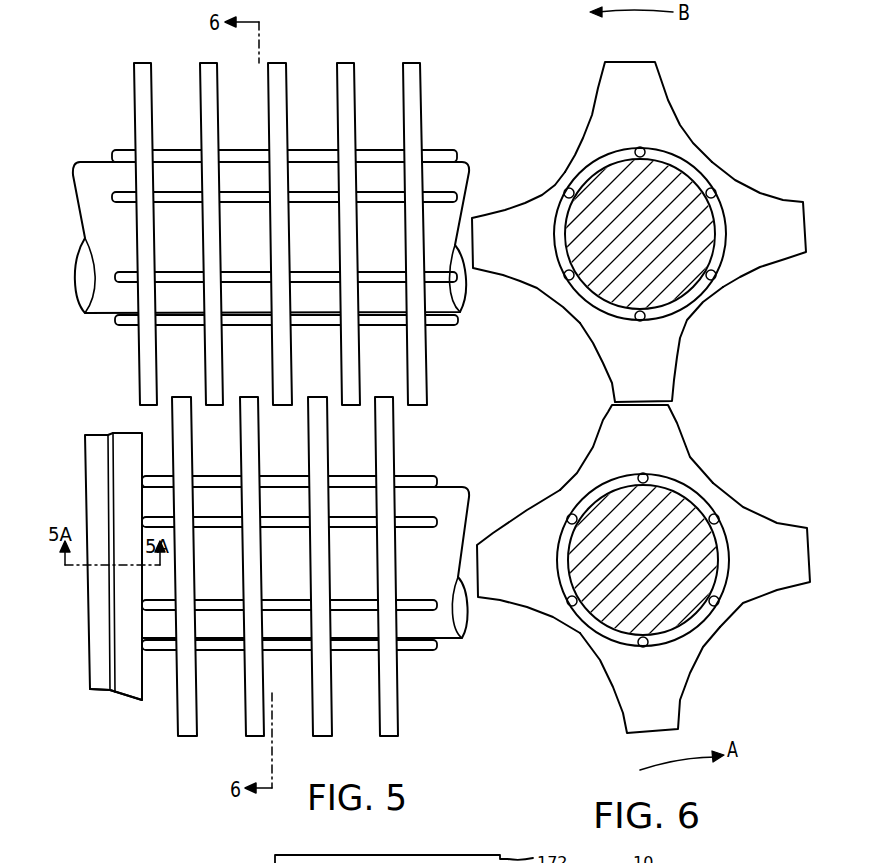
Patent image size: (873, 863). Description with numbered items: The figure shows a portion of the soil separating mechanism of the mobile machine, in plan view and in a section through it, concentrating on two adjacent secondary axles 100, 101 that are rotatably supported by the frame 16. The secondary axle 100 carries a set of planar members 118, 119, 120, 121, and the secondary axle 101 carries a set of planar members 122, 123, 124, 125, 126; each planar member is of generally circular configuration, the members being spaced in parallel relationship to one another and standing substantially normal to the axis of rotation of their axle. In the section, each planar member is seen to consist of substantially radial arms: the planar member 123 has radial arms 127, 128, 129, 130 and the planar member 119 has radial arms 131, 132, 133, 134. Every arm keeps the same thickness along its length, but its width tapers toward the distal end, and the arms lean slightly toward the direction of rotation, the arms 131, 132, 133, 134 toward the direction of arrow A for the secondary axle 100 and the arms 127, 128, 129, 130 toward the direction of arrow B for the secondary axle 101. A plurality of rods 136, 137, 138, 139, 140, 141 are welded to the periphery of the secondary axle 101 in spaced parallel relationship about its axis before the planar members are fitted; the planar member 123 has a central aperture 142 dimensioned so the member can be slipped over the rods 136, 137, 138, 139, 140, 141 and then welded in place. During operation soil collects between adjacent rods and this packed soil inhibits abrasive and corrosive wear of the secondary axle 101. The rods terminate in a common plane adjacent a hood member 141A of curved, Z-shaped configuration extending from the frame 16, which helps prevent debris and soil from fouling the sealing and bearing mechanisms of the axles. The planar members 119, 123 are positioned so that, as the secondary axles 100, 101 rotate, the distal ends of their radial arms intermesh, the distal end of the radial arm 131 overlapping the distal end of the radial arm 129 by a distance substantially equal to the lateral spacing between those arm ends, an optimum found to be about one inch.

In FIG. 5, the frame 16 is at (95, 658).
In FIG. 5, the secondary axle 100 is at (443, 623).
In FIG. 6, the secondary axle 100 is at (690, 605).
In FIG. 5, the secondary axle 101 is at (103, 173).
In FIG. 6, the secondary axle 101 is at (705, 220).
In FIG. 5, the planar member 118 is at (175, 713).
In FIG. 5, the planar member 119 is at (243, 712).
In FIG. 6, the planar member 119 is at (558, 605).
In FIG. 5, the planar member 120 is at (312, 715).
In FIG. 5, the planar member 121 is at (377, 712).
In FIG. 5, the planar member 122 is at (138, 92).
In FIG. 5, the planar member 123 is at (208, 90).
In FIG. 6, the planar member 123 is at (565, 188).
In FIG. 5, the planar member 124 is at (275, 88).
In FIG. 5, the planar member 125 is at (342, 88).
In FIG. 5, the planar member 126 is at (407, 88).
In FIG. 6, the radial arm 127 is at (638, 77).
In FIG. 6, the radial arm 128 is at (793, 240).
In FIG. 6, the radial arm 129 is at (660, 385).
In FIG. 6, the radial arm 130 is at (487, 250).
In FIG. 6, the radial arm 131 is at (650, 423).
In FIG. 6, the radial arm 132 is at (790, 540).
In FIG. 6, the radial arm 133 is at (668, 702).
In FIG. 6, the radial arm 134 is at (505, 558).
In FIG. 5, the rod 136 is at (192, 150).
In FIG. 6, the rod 136 is at (635, 148).
In FIG. 6, the rod 137 is at (712, 188).
In FIG. 6, the rod 138 is at (716, 280).
In FIG. 5, the rod 139 is at (125, 328).
In FIG. 6, the rod 139 is at (648, 318).
In FIG. 5, the rod 140 is at (117, 282).
In FIG. 6, the rod 140 is at (567, 290).
In FIG. 5, the rod 141 is at (193, 203).
In FIG. 6, the rod 141 is at (553, 218).
In FIG. 5, the hood member 141A is at (122, 693).
In FIG. 6, the central aperture 142 is at (585, 310).